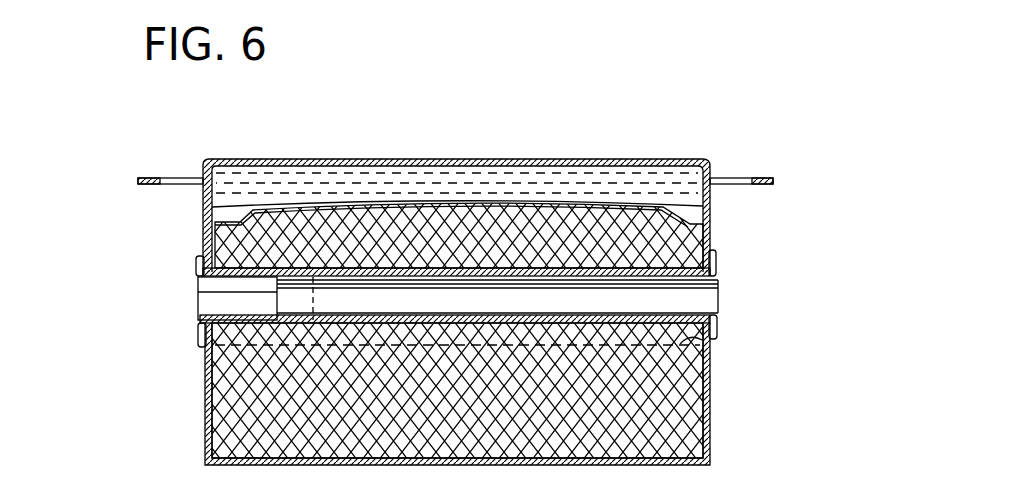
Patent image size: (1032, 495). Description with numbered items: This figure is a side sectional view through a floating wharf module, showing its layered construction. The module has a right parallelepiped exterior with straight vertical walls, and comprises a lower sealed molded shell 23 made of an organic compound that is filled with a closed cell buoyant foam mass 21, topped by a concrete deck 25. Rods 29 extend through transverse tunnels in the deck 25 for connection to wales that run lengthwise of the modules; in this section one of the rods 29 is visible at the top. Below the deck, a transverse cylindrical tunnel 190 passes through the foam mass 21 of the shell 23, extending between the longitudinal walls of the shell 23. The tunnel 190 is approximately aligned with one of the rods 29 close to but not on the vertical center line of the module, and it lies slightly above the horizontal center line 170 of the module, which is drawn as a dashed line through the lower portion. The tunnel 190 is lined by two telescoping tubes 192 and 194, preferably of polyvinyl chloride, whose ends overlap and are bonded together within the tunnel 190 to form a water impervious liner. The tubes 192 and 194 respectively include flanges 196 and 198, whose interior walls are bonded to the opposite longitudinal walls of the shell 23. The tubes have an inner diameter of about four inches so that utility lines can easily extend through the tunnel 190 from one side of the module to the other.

The concrete deck 25 is at (622, 158).
The rods 29 is at (747, 178).
The closed cell buoyant foam mass 21 is at (700, 235).
The flange 196 is at (198, 261).
The flange 198 is at (714, 259).
The telescoping tube 192 is at (212, 280).
The transverse cylindrical tunnel 190 is at (700, 292).
The telescoping tube 194 is at (716, 317).
The horizontal center line 170 is at (712, 338).
The lower sealed molded shell 23 is at (705, 410).